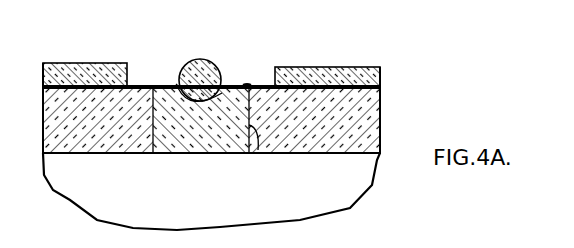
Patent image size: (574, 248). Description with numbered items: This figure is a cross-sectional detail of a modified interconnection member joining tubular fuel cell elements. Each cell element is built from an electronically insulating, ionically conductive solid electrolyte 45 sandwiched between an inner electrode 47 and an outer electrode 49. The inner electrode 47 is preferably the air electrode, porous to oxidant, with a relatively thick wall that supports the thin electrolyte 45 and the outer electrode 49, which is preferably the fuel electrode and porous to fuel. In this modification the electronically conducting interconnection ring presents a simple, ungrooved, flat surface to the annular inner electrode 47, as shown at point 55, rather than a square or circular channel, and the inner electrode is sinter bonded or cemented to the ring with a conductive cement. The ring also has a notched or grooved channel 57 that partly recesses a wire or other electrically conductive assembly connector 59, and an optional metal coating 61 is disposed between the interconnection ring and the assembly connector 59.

The solid electrolyte 45 is at (370, 80).
The inner electrode 47 is at (367, 110).
The outer electrode 49 is at (327, 70).
The flat surface 55 is at (258, 150).
The notched or grooved channel 57 is at (196, 104).
The assembly connector 59 is at (212, 70).
The metal coating 61 is at (178, 86).